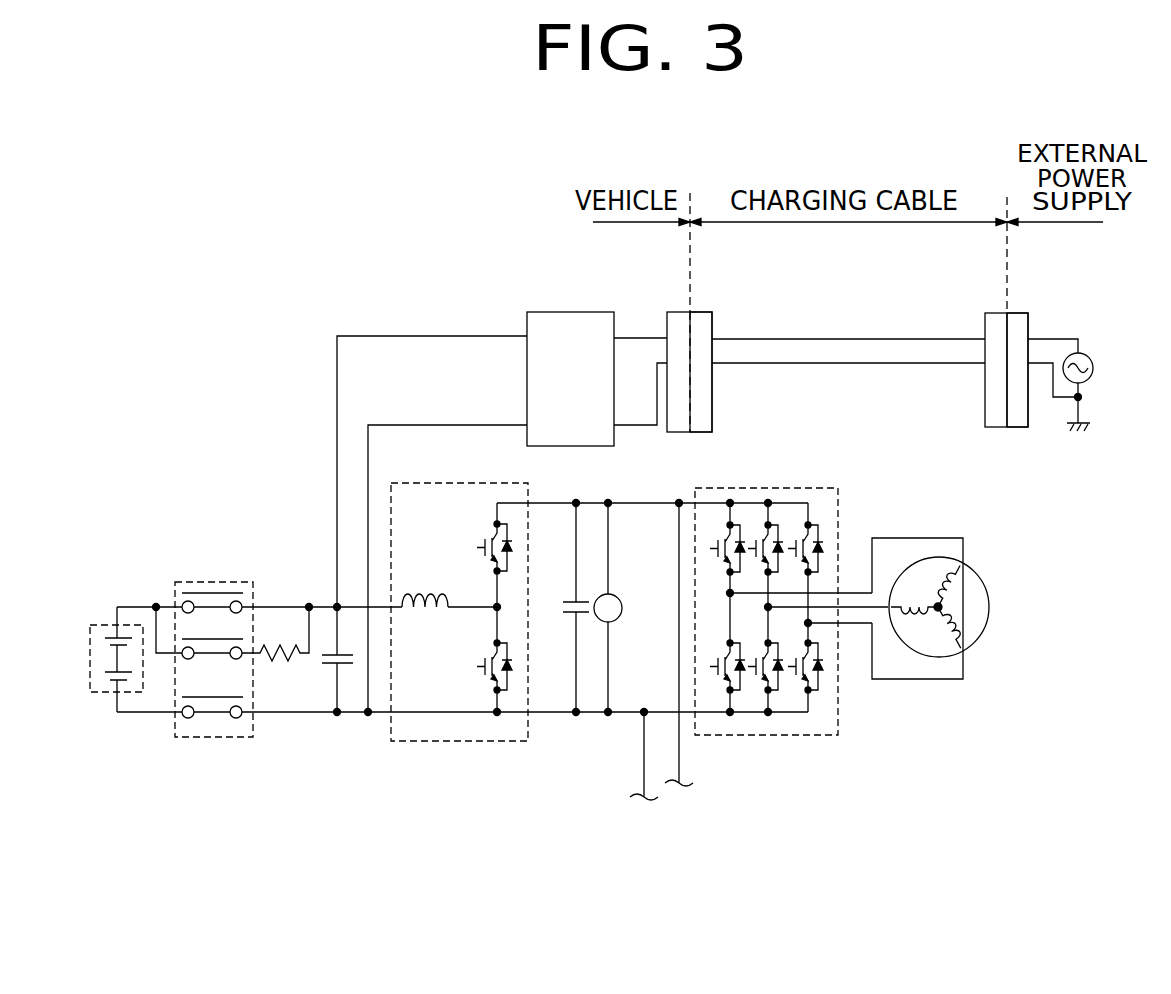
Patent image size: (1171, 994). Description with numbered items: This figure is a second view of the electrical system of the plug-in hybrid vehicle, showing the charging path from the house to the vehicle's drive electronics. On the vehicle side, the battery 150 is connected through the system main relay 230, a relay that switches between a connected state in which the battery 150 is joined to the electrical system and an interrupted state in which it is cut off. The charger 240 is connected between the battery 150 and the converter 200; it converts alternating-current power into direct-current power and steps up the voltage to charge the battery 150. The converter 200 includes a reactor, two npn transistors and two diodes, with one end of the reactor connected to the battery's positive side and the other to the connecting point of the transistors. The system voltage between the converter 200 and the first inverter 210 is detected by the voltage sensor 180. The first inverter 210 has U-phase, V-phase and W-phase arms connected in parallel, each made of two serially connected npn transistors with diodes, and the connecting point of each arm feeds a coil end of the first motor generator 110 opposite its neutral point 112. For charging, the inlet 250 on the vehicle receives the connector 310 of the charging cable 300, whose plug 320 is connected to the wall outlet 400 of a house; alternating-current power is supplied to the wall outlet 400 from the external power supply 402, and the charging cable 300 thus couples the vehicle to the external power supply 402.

The first motor generator 110 is at (965, 582).
The neutral point 112 is at (936, 604).
The battery 150 is at (103, 623).
The voltage sensor 180 is at (622, 616).
The converter 200 is at (508, 482).
The first inverter 210 is at (840, 688).
The system main relay (SMR) 230 is at (205, 581).
The charger 240 is at (527, 370).
The inlet 250 is at (678, 312).
The charging cable 300 is at (801, 303).
The connector 310 is at (703, 312).
The plug 320 is at (998, 313).
The wall outlet 400 is at (1017, 428).
The external power supply 402 is at (1086, 355).